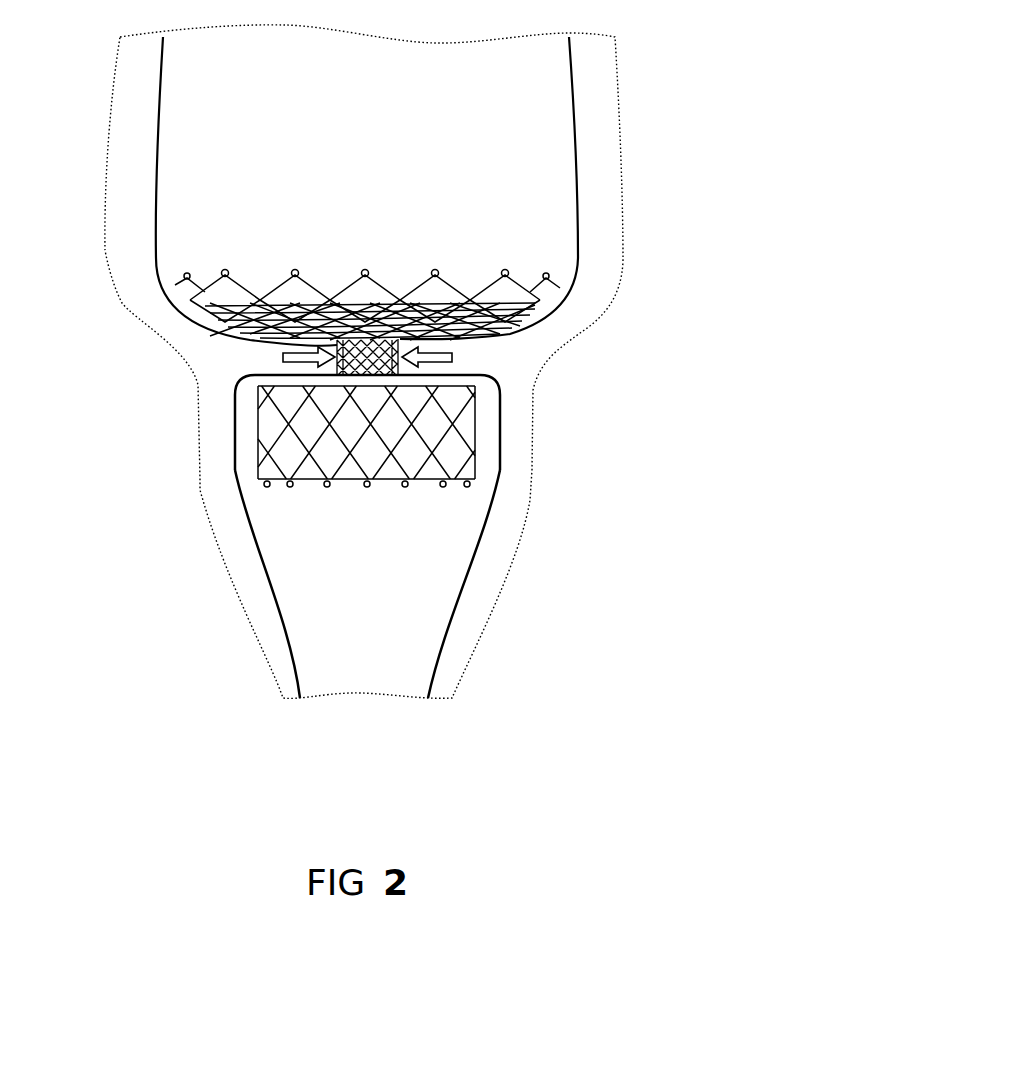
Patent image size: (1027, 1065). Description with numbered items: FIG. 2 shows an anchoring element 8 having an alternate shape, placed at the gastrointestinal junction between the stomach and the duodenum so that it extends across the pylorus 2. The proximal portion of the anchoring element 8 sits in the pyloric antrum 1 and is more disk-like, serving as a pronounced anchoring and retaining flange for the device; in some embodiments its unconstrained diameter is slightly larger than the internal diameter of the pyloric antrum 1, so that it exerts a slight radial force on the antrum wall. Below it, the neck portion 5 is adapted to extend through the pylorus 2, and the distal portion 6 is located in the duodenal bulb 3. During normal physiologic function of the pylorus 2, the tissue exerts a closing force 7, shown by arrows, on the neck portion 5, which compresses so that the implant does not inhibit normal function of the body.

The pyloric antrum 1 is at (555, 178).
The pylorus 2 is at (527, 367).
The duodenal bulb 3 is at (497, 485).
The neck portion 5 is at (375, 352).
The distal portion 6 is at (315, 483).
The closing force 7 is at (278, 357).
The anchoring element 8 is at (563, 282).